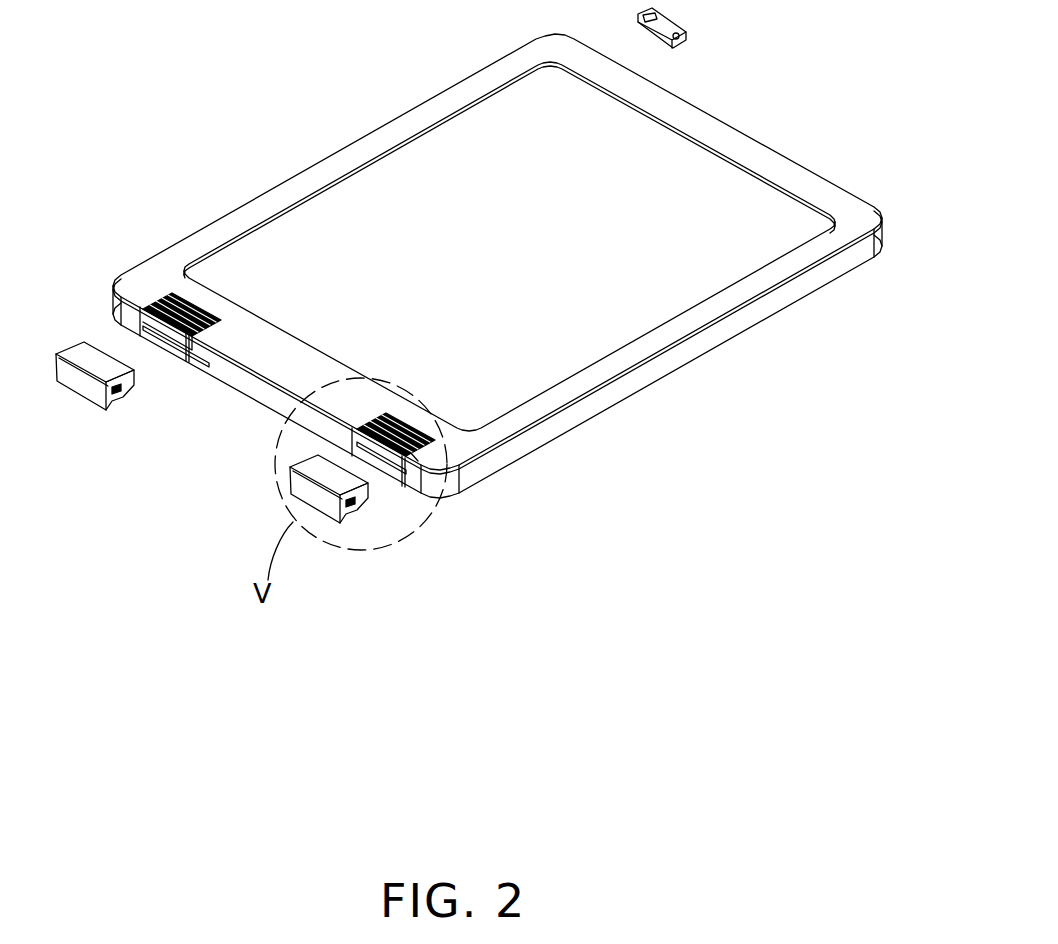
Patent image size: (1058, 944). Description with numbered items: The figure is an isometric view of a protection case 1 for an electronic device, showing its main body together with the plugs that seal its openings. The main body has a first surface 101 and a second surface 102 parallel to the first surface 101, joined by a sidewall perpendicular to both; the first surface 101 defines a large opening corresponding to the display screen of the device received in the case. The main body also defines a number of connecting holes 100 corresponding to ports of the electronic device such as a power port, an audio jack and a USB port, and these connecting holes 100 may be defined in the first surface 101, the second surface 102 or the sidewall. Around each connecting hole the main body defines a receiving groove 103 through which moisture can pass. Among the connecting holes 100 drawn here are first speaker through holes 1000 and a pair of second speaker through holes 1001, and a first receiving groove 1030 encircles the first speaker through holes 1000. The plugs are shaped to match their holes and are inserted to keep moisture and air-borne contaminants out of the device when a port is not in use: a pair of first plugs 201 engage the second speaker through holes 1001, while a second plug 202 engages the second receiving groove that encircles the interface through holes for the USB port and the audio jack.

The protection case 1 is at (330, 103).
The connecting holes 100 is at (385, 482).
The first surface 101 is at (655, 387).
The second surface 102 is at (428, 106).
The receiving groove 103 is at (222, 330).
The first speaker through holes 1000 is at (171, 293).
The second speaker through holes 1001 is at (366, 441).
The first receiving groove 1030 is at (148, 302).
The first plugs 201 is at (92, 387).
The second plug 202 is at (673, 18).